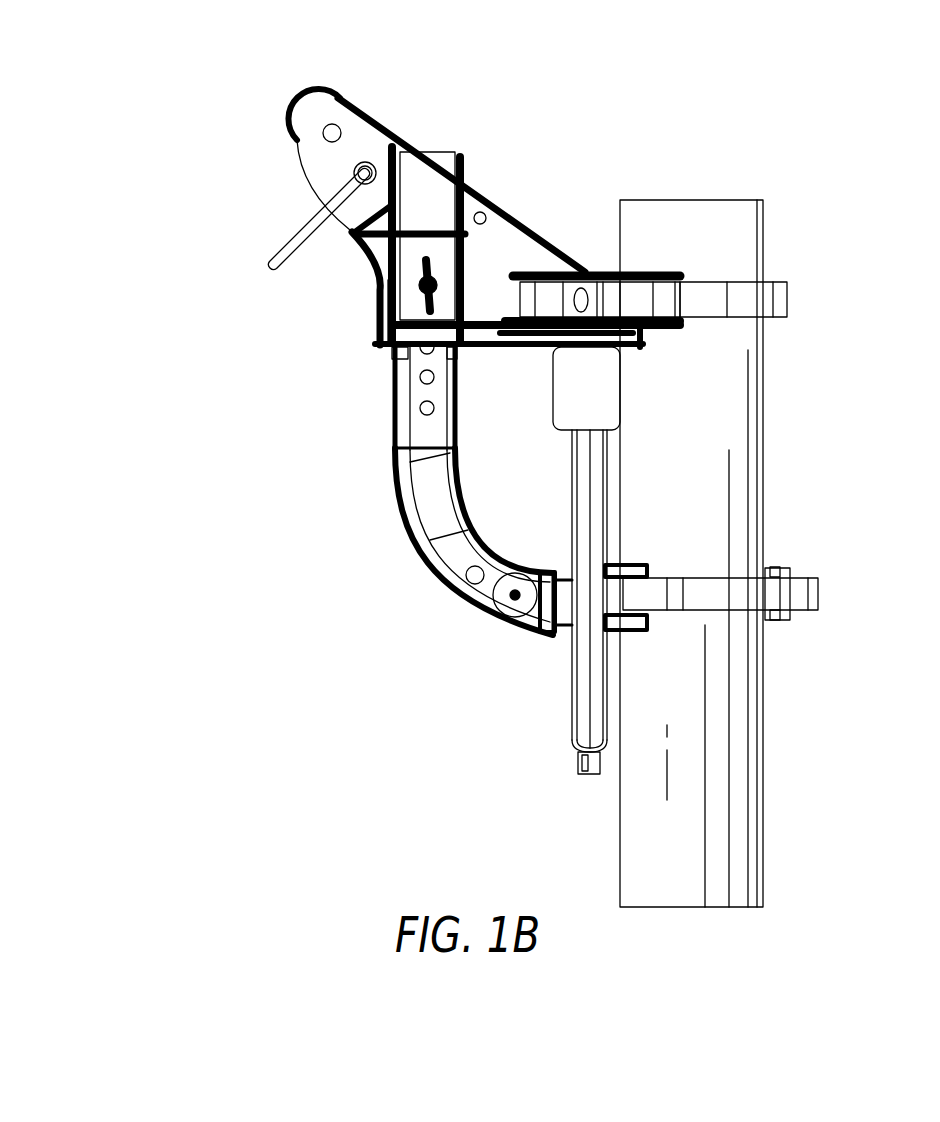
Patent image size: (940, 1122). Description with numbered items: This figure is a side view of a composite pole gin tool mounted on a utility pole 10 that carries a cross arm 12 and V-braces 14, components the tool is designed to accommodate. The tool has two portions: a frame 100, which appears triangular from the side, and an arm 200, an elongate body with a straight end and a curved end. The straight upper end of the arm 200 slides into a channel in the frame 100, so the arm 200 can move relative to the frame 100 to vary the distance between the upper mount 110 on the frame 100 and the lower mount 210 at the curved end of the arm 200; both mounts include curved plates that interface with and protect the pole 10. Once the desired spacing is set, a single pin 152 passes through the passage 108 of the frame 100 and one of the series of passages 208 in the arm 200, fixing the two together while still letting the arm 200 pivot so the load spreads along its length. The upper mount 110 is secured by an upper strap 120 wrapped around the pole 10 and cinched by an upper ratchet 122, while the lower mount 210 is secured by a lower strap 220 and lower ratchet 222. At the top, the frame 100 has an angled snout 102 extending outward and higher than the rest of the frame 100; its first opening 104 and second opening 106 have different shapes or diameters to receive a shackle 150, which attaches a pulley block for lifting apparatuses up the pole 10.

The utility pole 10 is at (733, 200).
The cross arm 12 is at (605, 383).
The V-braces 14 is at (585, 712).
The frame 100 is at (472, 183).
The snout 102 is at (363, 108).
The first opening 104 is at (353, 171).
The second opening 106 is at (322, 135).
The passage 108 is at (380, 272).
The upper mount 110 is at (637, 270).
The upper strap 120 is at (790, 300).
The upper ratchet 122 is at (600, 270).
The shackle 150 is at (268, 263).
The pin 152 is at (423, 303).
The arm 200 is at (415, 556).
The series of passages 208 is at (424, 377).
The lower mount 210 is at (648, 570).
The lower strap 220 is at (735, 595).
The lower ratchet 222 is at (815, 596).